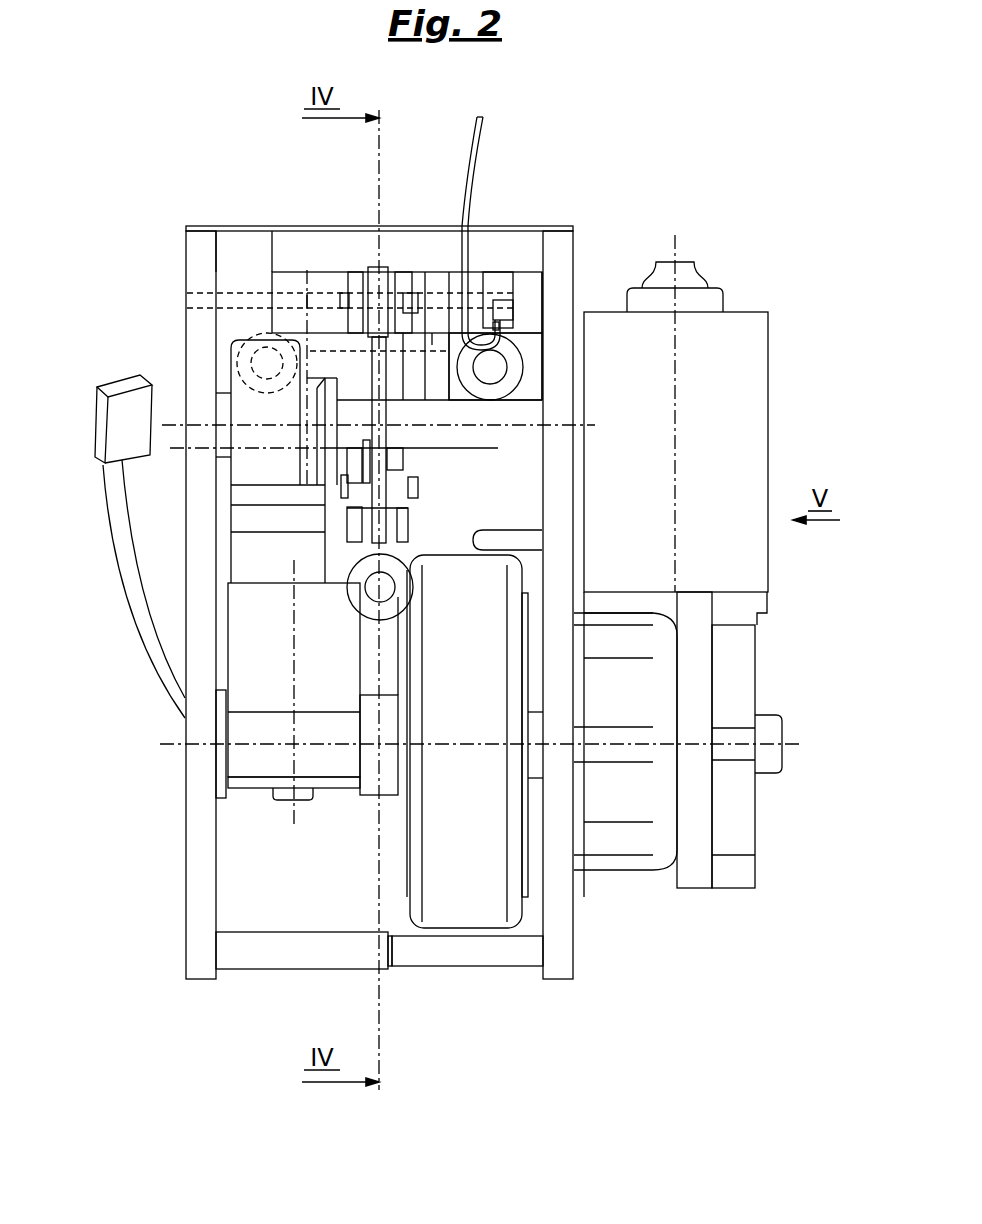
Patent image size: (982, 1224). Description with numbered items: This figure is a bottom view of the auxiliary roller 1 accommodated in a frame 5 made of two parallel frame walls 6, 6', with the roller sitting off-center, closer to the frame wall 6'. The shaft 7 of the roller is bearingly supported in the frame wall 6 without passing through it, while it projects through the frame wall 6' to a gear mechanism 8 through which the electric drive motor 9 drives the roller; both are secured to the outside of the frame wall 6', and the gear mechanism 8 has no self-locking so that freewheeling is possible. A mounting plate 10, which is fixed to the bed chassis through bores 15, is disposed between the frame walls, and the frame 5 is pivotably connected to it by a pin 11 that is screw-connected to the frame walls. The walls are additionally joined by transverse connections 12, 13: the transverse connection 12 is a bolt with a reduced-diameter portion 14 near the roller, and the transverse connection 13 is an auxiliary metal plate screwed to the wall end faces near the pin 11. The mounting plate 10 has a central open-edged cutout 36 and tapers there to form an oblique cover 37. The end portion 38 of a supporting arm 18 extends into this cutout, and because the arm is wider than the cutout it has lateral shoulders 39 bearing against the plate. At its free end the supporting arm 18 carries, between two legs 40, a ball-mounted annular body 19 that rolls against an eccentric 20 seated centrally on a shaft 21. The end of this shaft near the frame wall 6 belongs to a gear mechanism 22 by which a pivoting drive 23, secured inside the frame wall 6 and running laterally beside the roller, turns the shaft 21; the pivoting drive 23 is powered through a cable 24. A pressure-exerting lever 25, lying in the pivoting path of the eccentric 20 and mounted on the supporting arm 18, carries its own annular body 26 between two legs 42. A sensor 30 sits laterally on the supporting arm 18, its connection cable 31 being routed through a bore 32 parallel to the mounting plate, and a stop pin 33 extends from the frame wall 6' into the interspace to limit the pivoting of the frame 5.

The auxiliary roller 1 is at (475, 873).
The frame 5 is at (572, 929).
The frame wall 6 is at (199, 652).
The frame wall 6' is at (590, 643).
The shaft 7 is at (535, 763).
The gear mechanism 8 is at (700, 780).
The drive motor 9 is at (722, 432).
The mounting plate 10 is at (242, 277).
The pin 11 is at (560, 295).
The transverse connection 12 is at (268, 950).
The transverse connection 13 is at (315, 226).
The reduced-diameter portion 14 is at (453, 955).
The bore 15 is at (262, 364).
The supporting arm 18 is at (300, 282).
The annular body 19 is at (388, 278).
The eccentric 20 is at (380, 413).
The shaft 21 is at (493, 440).
The gear mechanism 22 is at (248, 462).
The pivoting drive 23 is at (252, 657).
The cable 24 is at (117, 562).
The pressure-exerting lever 25 is at (403, 495).
The annular body 26 is at (327, 452).
The sensor 30 is at (503, 278).
The connection cable 31 is at (470, 172).
The bore 32 is at (463, 282).
The stop pin 33 is at (513, 540).
The open-edged cutout 36 is at (432, 300).
The cover 37 is at (323, 368).
The end portion 38 is at (332, 282).
The lateral shoulders 39 is at (238, 237).
The legs 40 is at (397, 287).
The legs 42 is at (357, 525).